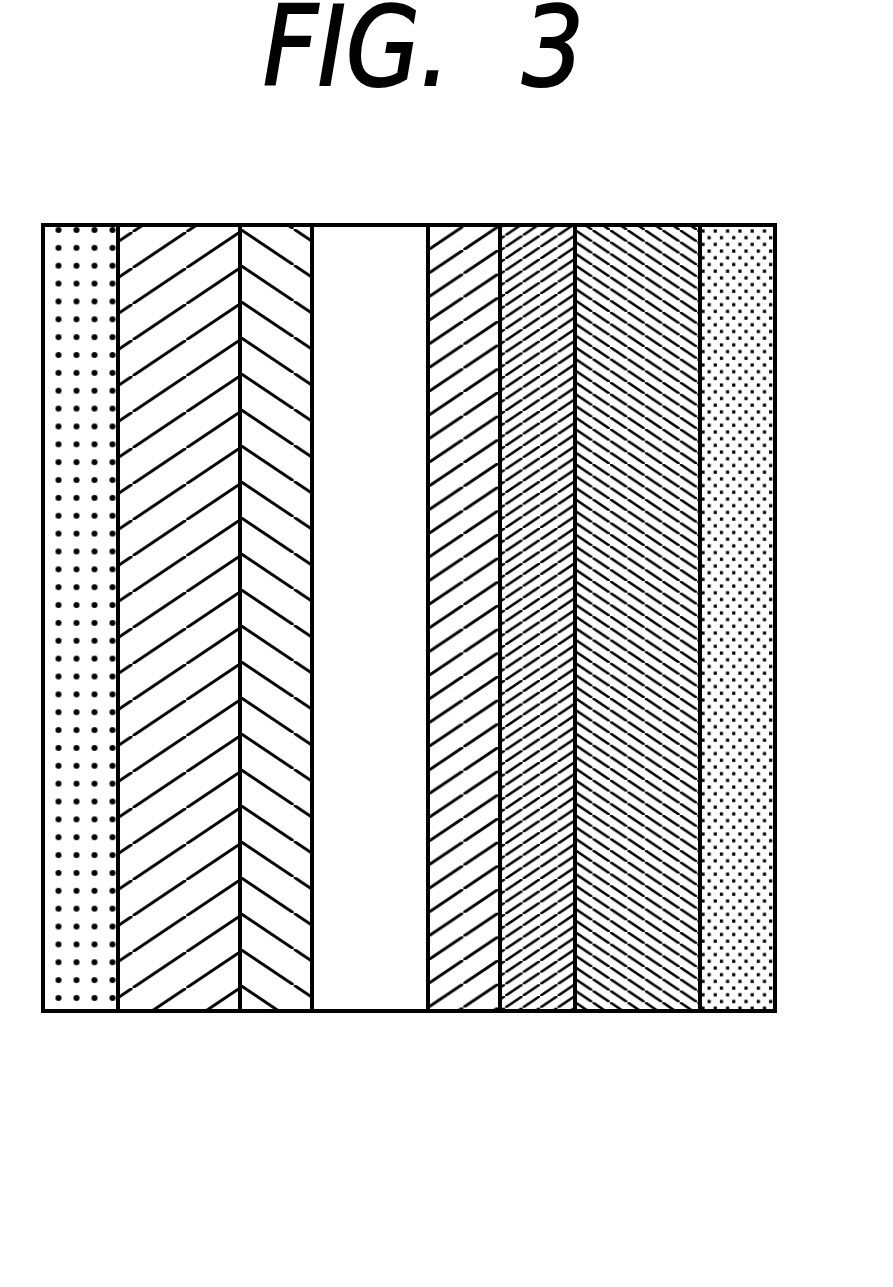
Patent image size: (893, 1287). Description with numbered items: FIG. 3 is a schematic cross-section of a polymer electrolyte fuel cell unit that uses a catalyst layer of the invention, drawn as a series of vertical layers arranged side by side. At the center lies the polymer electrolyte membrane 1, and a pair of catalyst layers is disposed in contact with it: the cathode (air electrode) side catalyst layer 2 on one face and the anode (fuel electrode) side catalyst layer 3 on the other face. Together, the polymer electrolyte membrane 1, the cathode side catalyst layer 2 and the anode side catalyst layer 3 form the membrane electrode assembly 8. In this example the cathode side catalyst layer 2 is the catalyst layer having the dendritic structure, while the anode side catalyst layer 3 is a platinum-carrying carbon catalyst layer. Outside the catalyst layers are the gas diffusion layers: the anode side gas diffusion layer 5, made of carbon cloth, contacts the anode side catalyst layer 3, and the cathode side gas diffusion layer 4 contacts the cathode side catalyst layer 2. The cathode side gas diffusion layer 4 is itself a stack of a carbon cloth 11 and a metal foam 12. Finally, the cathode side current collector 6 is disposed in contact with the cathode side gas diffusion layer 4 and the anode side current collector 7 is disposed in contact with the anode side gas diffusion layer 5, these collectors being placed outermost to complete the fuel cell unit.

The polymer electrolyte membrane 1 is at (375, 998).
The cathode side catalyst layer 2 is at (470, 998).
The anode side catalyst layer 3 is at (295, 998).
The cathode side gas diffusion layer 4 is at (520, 1172).
The anode side gas diffusion layer 5 is at (178, 998).
The cathode side current collector 6 is at (742, 998).
The anode side current collector 7 is at (77, 998).
The membrane electrode assembly 8 is at (487, 1172).
The carbon cloth 11 is at (543, 998).
The metal foam 12 is at (640, 998).